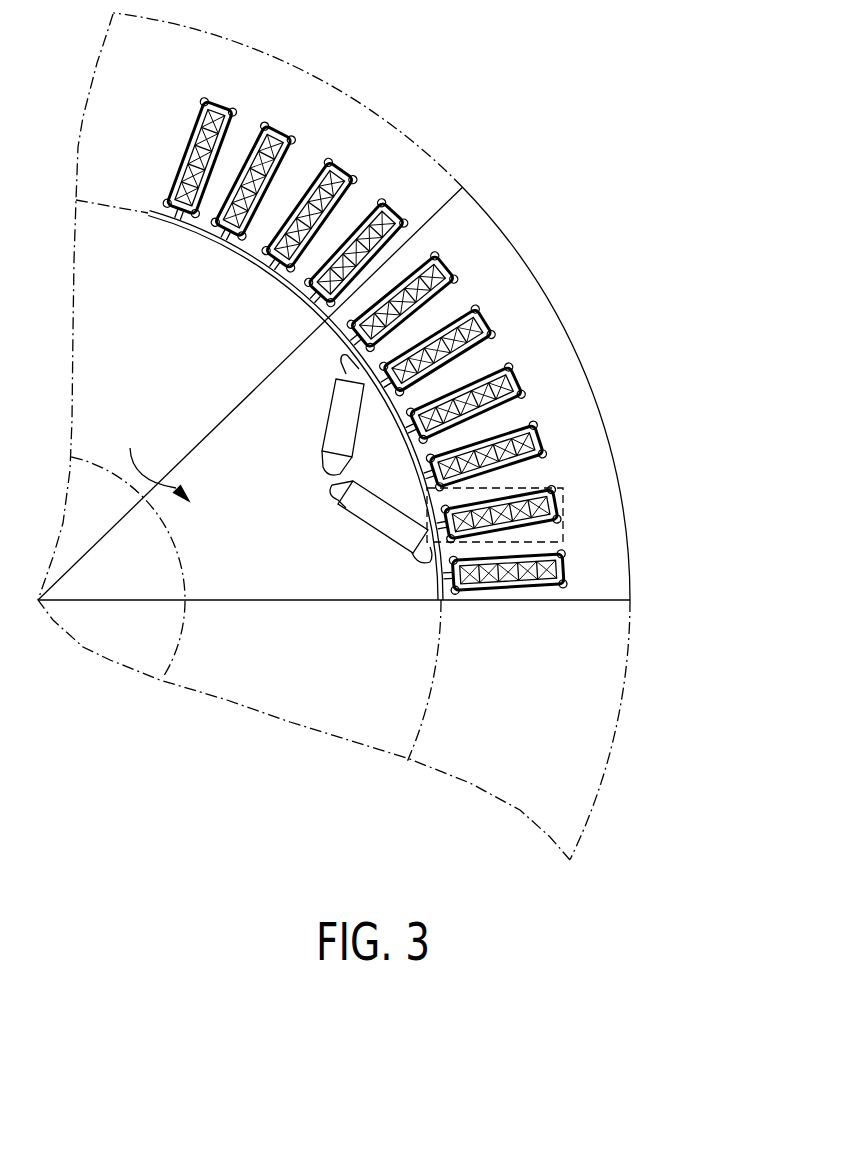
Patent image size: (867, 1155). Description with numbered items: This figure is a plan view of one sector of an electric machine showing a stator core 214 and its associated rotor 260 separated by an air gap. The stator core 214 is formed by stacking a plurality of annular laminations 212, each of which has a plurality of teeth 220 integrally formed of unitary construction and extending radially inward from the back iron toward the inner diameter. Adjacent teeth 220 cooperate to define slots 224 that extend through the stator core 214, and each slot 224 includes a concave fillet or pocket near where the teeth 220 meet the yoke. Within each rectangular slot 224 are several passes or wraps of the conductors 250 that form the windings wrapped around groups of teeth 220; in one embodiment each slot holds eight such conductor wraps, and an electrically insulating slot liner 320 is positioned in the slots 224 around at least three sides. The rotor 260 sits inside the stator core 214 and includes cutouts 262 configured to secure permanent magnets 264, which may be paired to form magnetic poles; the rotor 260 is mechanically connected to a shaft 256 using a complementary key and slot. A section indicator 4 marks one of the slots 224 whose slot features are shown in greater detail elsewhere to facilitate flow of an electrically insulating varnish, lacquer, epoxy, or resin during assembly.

The section view location 4 is at (563, 530).
The lamination 212 is at (492, 213).
The stator core 214 is at (650, 121).
The teeth 220 is at (428, 312).
The slots 224 is at (428, 383).
The conductors 250 is at (530, 588).
The shaft 256 is at (108, 568).
The rotor 260 is at (153, 456).
The cutouts 262 is at (343, 365).
The permanent magnets 264 is at (330, 410).
The slot liners 320 is at (462, 335).